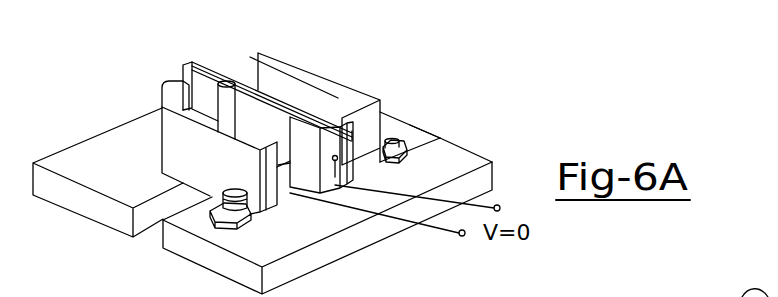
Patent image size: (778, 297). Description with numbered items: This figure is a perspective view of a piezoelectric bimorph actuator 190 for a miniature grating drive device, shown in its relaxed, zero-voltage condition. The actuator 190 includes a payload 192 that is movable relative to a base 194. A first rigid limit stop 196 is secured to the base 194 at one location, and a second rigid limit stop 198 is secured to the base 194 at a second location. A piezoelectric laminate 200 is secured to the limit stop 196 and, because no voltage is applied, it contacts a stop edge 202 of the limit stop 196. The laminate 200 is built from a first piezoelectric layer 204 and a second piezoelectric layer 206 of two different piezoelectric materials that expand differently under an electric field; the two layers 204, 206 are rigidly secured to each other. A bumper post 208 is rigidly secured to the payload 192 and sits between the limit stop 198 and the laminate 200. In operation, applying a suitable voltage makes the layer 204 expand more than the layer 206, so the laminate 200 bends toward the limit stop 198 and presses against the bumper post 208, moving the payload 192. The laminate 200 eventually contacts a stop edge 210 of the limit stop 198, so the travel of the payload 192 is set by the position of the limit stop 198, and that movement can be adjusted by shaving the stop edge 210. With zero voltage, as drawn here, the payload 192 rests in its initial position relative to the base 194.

The piezoelectric bimorph actuator 190 is at (376, 49).
The payload 192 is at (143, 132).
The base 194 is at (226, 272).
The first rigid limit stop 196 is at (320, 72).
The second rigid limit stop 198 is at (277, 184).
The piezoelectric laminate 200 is at (306, 106).
The stop edge 202 is at (208, 60).
The first piezoelectric layer 204 is at (194, 60).
The second piezoelectric layer 206 is at (182, 62).
The bumper post 208 is at (132, 155).
The stop edge 210 is at (172, 87).